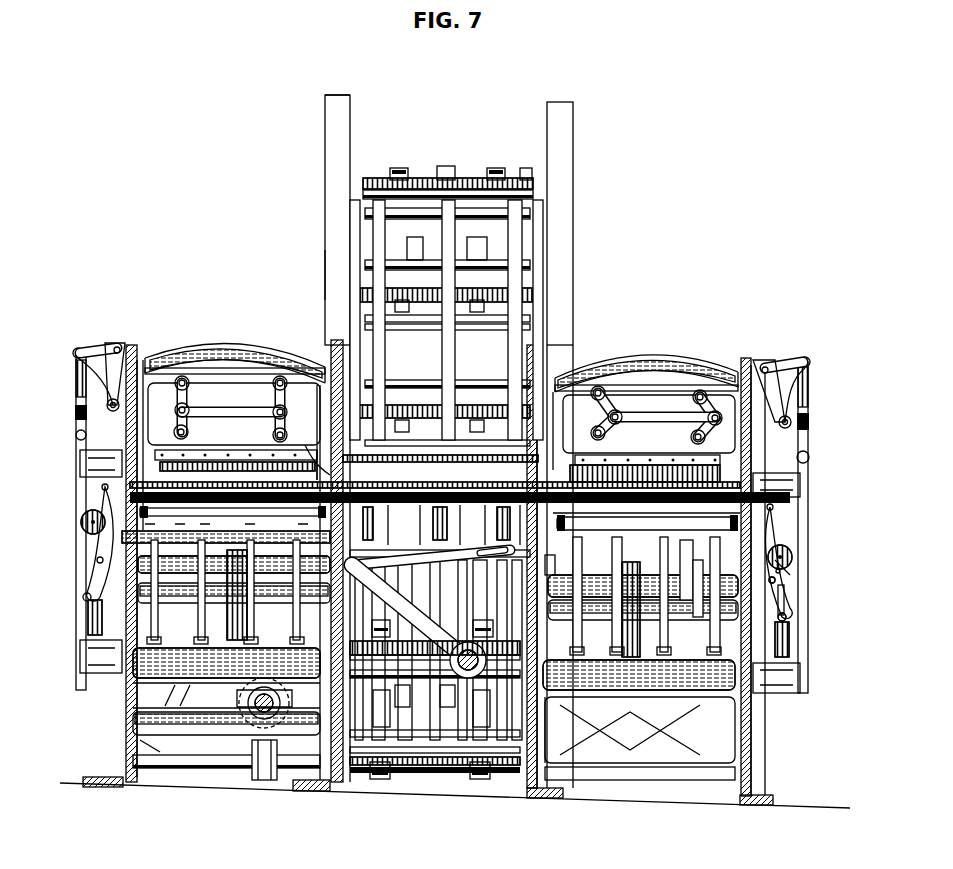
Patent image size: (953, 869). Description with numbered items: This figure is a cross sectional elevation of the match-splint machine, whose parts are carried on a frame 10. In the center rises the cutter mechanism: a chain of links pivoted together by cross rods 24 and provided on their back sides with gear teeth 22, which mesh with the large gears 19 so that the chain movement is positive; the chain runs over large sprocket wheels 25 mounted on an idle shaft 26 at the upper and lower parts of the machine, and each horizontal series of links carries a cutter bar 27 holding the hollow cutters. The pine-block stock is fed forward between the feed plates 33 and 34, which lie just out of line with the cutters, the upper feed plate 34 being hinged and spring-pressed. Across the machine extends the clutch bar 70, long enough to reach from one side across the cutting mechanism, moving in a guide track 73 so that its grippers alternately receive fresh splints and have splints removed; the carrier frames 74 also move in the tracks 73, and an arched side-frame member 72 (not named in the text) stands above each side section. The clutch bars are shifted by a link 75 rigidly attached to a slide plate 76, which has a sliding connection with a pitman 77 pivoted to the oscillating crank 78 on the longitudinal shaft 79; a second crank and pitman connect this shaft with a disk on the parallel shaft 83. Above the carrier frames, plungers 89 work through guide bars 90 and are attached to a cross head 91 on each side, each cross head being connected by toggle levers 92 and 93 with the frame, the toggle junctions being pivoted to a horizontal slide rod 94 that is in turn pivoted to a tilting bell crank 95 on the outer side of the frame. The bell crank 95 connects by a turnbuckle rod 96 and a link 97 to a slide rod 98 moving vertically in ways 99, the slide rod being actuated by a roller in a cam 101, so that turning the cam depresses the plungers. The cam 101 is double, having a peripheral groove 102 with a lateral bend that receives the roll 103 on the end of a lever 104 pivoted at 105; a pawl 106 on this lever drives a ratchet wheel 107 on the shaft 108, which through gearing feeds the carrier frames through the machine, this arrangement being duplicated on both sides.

The frame 10 is at (553, 298).
The large gears 19 is at (374, 524).
The gear teeth 22 is at (442, 178).
The cross rods 24 is at (470, 178).
The sprocket wheels 25 is at (497, 248).
The idle shaft 26 is at (315, 197).
The cutter bar 27 is at (522, 180).
The feed plate 33 is at (456, 500).
The upper feed plate 34 is at (378, 470).
The clutch bar 70 is at (565, 495).
The arched frame member 72 is at (148, 378).
The guide track 73 is at (556, 525).
The carrier frames 74 is at (612, 526).
The link 75 is at (313, 468).
The slide plate 76 is at (285, 560).
The pitman 77 is at (459, 555).
The oscillating crank 78 is at (388, 594).
The shaft 79 is at (457, 654).
The shaft 83 is at (258, 722).
The plungers 89 is at (231, 452).
The guide bars 90 is at (250, 470).
The cross head 91 is at (204, 448).
The toggle lever 92 is at (187, 414).
The toggle lever 93 is at (196, 382).
The slide rod 94 is at (230, 412).
The tilting bell crank 95 is at (88, 345).
The rod 96 is at (86, 399).
The link 97 is at (86, 434).
The slide rod 98 is at (77, 690).
The ways 99 is at (800, 491).
The cam 101 is at (790, 642).
The groove 102 is at (790, 620).
The roll 103 is at (788, 602).
The lever 104 is at (793, 560).
The pivot 105 is at (443, 552).
The pawl 106 is at (782, 578).
The ratchet wheel 107 is at (786, 568).
The shaft 108 is at (93, 520).